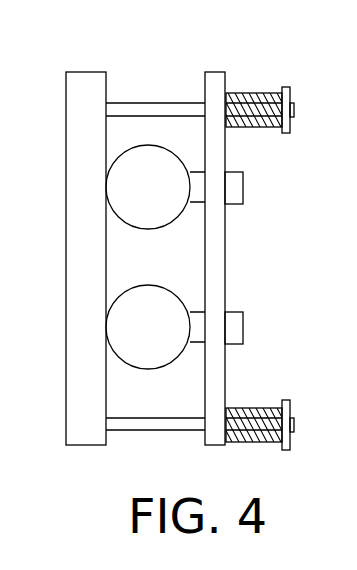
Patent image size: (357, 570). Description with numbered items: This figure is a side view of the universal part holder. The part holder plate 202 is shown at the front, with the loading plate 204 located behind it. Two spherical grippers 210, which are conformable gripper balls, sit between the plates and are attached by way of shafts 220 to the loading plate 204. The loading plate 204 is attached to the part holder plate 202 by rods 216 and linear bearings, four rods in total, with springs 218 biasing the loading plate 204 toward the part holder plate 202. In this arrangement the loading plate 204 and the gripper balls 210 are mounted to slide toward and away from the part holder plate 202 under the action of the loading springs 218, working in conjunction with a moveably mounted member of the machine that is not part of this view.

The part holder plate 202 is at (85, 72).
The loading plate 204 is at (225, 258).
The spherical gripper 210 is at (148, 230).
The rod 216 is at (147, 102).
The spring 218 is at (258, 93).
The shaft 220 is at (243, 188).